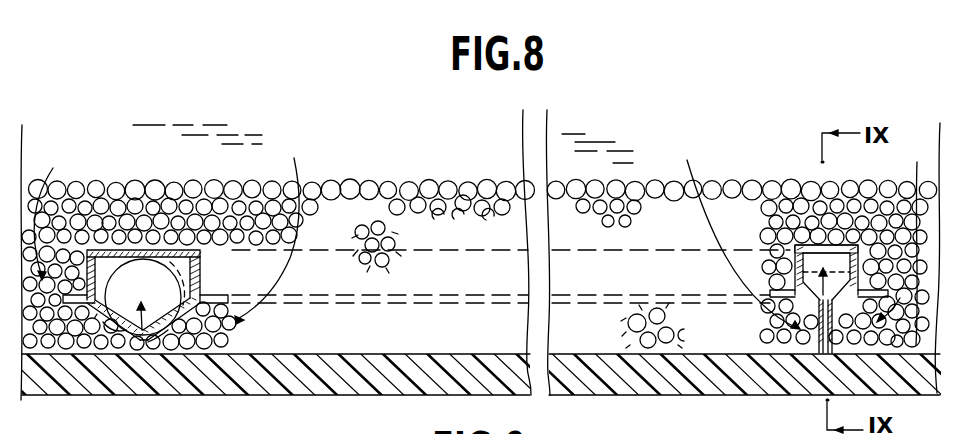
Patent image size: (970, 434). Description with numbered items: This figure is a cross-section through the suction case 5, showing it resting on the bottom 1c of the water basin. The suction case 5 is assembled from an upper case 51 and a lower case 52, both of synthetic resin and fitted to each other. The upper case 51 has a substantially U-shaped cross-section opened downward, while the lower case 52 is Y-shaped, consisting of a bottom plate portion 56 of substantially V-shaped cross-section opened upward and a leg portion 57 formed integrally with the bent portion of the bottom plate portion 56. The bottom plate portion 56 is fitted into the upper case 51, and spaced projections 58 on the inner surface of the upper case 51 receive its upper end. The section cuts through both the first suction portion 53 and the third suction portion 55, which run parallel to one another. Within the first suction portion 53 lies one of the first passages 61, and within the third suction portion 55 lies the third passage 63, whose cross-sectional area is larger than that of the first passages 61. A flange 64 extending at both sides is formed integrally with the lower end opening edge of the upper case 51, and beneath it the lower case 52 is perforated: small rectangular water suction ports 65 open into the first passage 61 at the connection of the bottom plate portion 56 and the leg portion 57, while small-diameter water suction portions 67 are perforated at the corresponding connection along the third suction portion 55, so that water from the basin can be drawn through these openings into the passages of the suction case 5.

The bottom of the water basin 1c is at (310, 384).
The suction case 5 is at (166, 242).
The upper case 51 is at (810, 247).
The lower case 52 is at (861, 333).
The first suction portion 53 is at (743, 244).
The third suction portion 55 is at (202, 265).
The bottom plate portion 56 is at (198, 326).
The leg portion 57 is at (145, 340).
The projections 58 is at (203, 241).
The first passages 61 is at (838, 250).
The third passage 63 is at (133, 250).
The flange 64 is at (216, 297).
The water suction ports 65 is at (815, 356).
The small-diameter water suction portions 67 is at (143, 338).